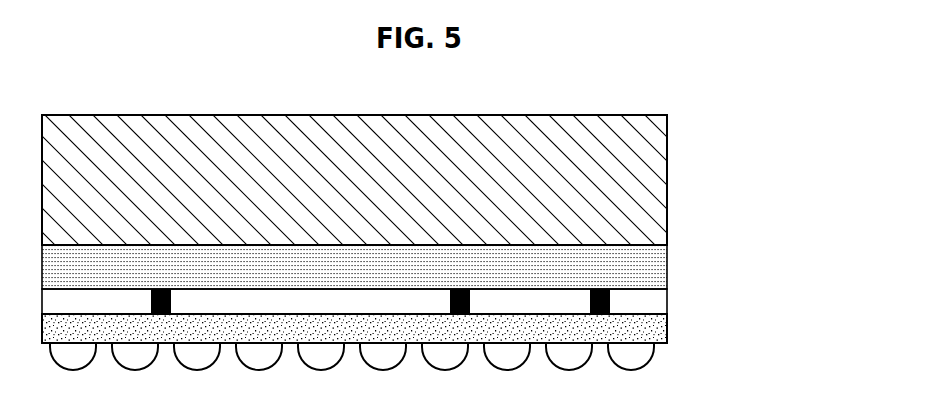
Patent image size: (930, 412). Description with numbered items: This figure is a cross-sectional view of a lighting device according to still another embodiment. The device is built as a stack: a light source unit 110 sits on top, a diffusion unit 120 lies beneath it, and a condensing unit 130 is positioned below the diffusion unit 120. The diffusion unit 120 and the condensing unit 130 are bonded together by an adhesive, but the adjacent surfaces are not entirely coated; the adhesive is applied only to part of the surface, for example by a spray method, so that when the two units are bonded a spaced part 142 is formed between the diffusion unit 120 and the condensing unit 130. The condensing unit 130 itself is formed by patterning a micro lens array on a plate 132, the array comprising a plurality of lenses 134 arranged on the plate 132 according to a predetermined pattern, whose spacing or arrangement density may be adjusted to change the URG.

The light source unit 110 is at (650, 186).
The diffusion unit 120 is at (668, 268).
The spaced part 142 is at (655, 304).
The condensing unit 130 is at (418, 363).
The plate 132 is at (673, 325).
The lenses 134 is at (632, 362).